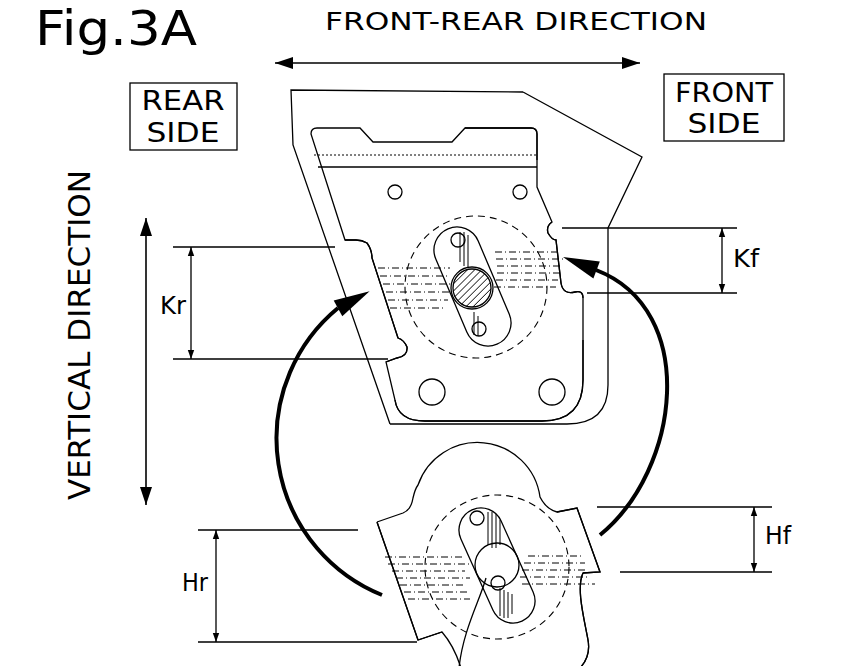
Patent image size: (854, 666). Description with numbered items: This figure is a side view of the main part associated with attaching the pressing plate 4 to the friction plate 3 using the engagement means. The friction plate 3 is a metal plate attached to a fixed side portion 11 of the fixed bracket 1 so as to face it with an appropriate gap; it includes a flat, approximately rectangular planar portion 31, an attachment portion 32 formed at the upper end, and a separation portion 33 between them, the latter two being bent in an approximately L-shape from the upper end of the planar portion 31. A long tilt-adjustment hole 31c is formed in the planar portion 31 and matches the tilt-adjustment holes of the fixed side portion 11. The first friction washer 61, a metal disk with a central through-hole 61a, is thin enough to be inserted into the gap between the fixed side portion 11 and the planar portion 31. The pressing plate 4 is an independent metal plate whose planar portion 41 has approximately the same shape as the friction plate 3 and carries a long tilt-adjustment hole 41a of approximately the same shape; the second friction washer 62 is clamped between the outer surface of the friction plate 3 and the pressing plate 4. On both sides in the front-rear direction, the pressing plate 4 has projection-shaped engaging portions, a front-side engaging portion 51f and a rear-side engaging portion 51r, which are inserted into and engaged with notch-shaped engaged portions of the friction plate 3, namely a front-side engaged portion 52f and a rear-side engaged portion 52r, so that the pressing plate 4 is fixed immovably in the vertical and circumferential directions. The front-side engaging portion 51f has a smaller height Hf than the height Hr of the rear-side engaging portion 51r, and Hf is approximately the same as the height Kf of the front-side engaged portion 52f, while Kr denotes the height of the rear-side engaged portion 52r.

The fixed bracket 1 is at (308, 211).
The fixed side portion 11 is at (607, 195).
The friction plate 3 is at (555, 194).
The planar portion 31 is at (572, 353).
The long tilt-adjustment hole 31c is at (487, 336).
The attachment portion 32 is at (523, 135).
The separation portion 33 is at (528, 159).
The pressing plate 4 is at (551, 485).
The planar portion 41 is at (568, 647).
The long tilt-adjustment hole 41a is at (483, 512).
The rear-side engaging portion 51r is at (402, 602).
The front-side engaging portion 51f is at (603, 560).
The rear-side engaged portion 52r is at (372, 272).
The front-side engaged portion 52f is at (558, 252).
The first friction washer 61 is at (463, 215).
The through-hole 61a is at (443, 253).
The second friction washer 62 is at (412, 490).